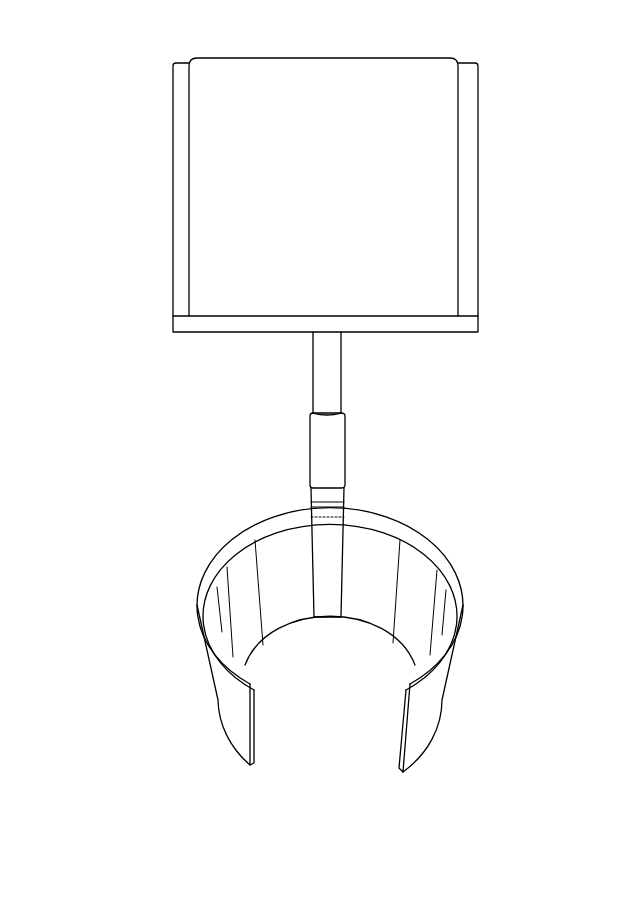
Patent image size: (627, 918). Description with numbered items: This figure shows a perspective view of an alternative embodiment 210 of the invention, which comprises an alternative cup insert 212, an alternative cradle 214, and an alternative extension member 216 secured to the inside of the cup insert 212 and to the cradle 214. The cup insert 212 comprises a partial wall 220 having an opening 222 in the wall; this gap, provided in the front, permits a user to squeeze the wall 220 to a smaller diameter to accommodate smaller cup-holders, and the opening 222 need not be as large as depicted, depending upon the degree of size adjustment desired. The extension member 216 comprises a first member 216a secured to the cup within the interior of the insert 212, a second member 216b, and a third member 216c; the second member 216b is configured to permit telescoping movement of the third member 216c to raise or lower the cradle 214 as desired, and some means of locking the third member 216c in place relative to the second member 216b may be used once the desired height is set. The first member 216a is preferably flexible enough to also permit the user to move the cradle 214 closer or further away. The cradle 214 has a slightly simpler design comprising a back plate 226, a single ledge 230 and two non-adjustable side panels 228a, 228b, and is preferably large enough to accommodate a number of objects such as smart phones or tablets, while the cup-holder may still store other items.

The alternative embodiment 210 is at (512, 372).
The cup insert 212 is at (213, 557).
The cradle 214 is at (171, 94).
The extension member 216 is at (352, 415).
The first member 216a is at (328, 547).
The second member 216b is at (345, 468).
The third member 216c is at (313, 362).
The partial wall 220 is at (197, 621).
The opening 222 is at (297, 747).
The back plate 226 is at (343, 158).
The side panel 228a is at (178, 218).
The side panel 228b is at (477, 193).
The ledge 230 is at (350, 323).